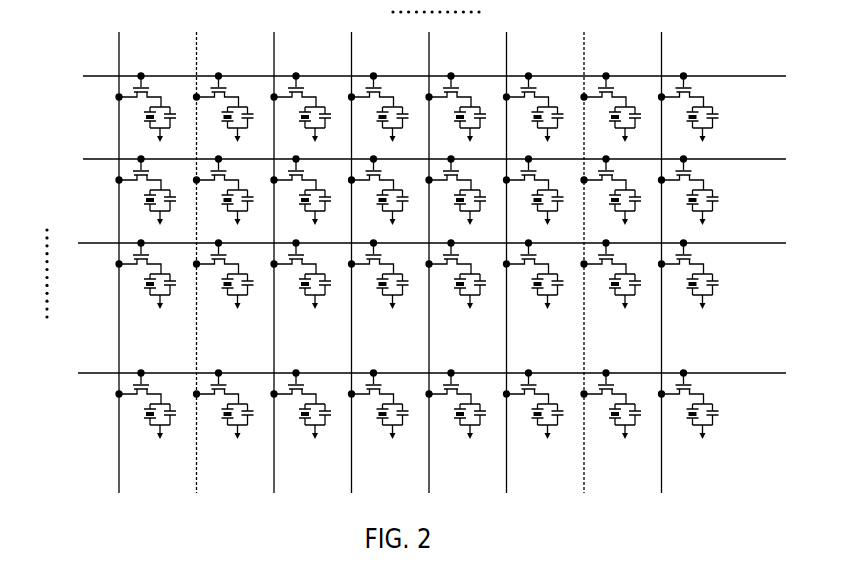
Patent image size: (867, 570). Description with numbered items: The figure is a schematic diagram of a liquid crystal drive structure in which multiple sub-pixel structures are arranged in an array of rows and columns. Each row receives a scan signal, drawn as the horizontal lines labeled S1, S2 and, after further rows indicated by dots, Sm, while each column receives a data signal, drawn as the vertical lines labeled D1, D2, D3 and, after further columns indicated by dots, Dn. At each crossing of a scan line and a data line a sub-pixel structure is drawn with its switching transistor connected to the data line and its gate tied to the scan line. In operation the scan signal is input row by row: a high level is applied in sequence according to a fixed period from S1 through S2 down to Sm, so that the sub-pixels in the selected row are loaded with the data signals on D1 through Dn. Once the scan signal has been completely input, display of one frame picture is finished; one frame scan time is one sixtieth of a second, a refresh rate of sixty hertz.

The data signal D1 is at (125, 247).
The data signal D2 is at (202, 247).
The data signal D3 is at (280, 247).
The data signal Dn is at (652, 247).
The scan signal S1 is at (410, 77).
The scan signal S2 is at (409, 159).
The scan signal Sm is at (409, 374).